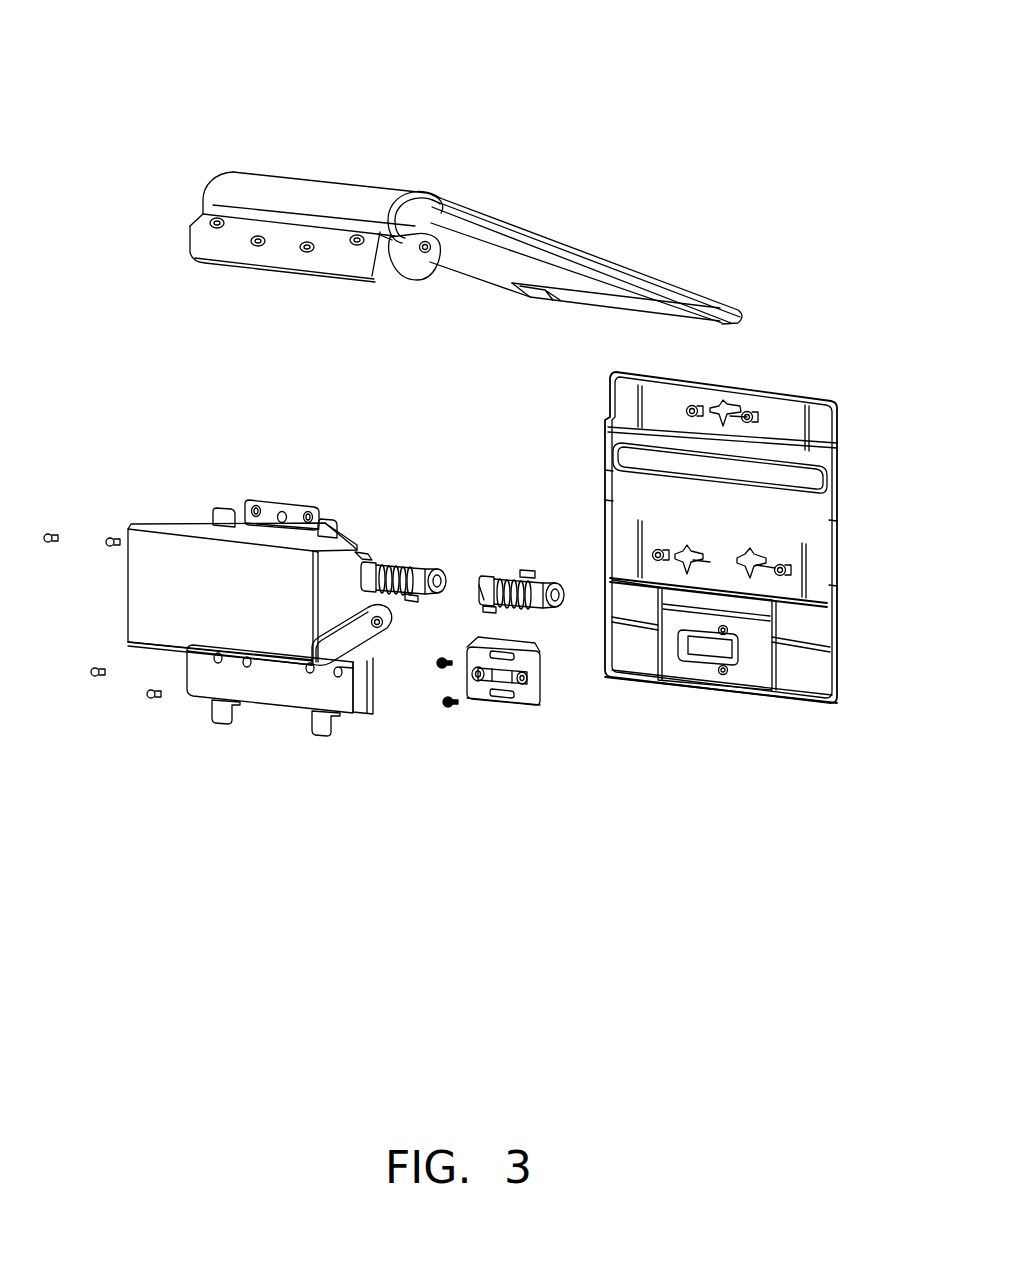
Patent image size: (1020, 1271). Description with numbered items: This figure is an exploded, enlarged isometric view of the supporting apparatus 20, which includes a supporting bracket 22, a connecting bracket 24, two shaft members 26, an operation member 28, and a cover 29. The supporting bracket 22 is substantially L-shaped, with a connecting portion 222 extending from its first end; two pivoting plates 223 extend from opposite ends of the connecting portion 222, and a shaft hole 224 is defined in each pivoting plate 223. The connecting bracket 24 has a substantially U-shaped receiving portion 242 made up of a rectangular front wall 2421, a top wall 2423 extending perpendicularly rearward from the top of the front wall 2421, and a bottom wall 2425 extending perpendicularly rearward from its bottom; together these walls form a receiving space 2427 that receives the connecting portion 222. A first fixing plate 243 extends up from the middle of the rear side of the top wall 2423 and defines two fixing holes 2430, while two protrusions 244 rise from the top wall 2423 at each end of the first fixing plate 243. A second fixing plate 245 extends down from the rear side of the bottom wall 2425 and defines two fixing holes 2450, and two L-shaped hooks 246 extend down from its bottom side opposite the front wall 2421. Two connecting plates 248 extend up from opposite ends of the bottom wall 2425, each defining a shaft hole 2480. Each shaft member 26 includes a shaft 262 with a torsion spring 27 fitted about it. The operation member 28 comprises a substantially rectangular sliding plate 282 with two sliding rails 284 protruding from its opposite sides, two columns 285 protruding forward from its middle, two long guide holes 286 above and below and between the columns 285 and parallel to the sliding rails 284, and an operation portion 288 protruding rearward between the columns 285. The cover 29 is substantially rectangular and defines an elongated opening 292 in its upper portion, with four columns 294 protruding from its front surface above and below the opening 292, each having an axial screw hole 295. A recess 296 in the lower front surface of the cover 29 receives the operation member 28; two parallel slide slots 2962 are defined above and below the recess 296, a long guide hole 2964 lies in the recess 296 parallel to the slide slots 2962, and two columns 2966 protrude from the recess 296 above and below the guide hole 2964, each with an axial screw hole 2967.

The supporting apparatus 20 is at (228, 80).
The supporting bracket 22 is at (535, 248).
The connecting portion 222 is at (287, 247).
The pivoting plates 223 is at (391, 270).
The shaft hole 224 is at (431, 254).
The connecting bracket 24 is at (285, 690).
The receiving portion 242 is at (202, 581).
The front wall 2421 is at (143, 612).
The top wall 2423 is at (168, 522).
The bottom wall 2425 is at (355, 705).
The receiving space 2427 is at (330, 565).
The first fixing plate 243 is at (266, 505).
The fixing holes 2430 is at (306, 511).
The protrusions 244 is at (213, 512).
The second fixing plate 245 is at (200, 690).
The fixing holes 2450 is at (200, 655).
The L-shaped hooks 246 is at (218, 722).
The connecting plates 248 is at (365, 645).
The shaft hole 2480 is at (375, 632).
The shaft members 26 is at (508, 568).
The shaft 262 is at (495, 580).
The torsion spring 27 is at (398, 565).
The operation member 28 is at (535, 692).
The sliding plate 282 is at (530, 660).
The sliding rails 284 is at (525, 712).
The columns 285 is at (530, 680).
The guide holes 286 is at (505, 697).
The operation portion 288 is at (488, 680).
The cover 29 is at (618, 498).
The elongated opening 292 is at (615, 452).
The columns 294 is at (775, 565).
The screw hole 295 is at (690, 405).
The recess 296 is at (757, 680).
The slide slots 2962 is at (658, 692).
The guide hole 2964 is at (722, 648).
The columns 2966 is at (727, 693).
The screw hole 2967 is at (675, 622).